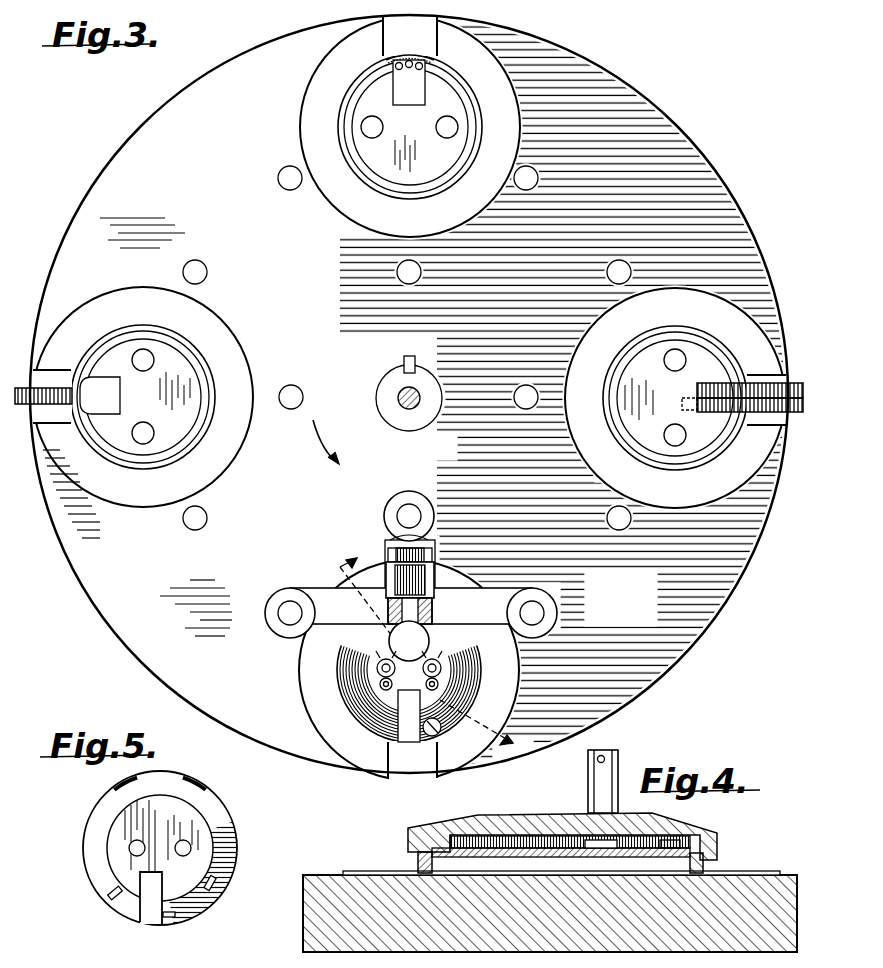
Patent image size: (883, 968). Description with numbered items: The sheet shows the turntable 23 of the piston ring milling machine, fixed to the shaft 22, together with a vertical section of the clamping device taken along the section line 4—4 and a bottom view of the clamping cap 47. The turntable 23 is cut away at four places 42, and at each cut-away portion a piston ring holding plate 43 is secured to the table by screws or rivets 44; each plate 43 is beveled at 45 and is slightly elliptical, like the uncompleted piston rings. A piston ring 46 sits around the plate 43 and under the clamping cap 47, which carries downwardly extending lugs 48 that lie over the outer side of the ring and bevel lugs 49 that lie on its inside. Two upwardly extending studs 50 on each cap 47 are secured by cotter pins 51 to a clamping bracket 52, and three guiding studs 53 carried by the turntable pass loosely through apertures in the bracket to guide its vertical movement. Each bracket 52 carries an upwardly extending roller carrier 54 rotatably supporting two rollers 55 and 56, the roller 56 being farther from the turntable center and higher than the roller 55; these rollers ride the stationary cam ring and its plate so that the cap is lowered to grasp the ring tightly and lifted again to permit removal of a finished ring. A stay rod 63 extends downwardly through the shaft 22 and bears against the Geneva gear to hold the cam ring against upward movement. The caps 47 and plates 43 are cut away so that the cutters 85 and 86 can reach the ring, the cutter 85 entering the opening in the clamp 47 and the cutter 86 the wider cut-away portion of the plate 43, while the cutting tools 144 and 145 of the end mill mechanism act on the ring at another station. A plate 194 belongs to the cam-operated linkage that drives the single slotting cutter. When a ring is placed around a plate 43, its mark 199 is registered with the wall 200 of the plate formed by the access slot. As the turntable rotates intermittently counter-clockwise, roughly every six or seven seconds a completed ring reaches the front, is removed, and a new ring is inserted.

In FIG. 3, the section line 4 is at (422, 657).
In FIG. 3, the shaft 22 is at (429, 418).
In FIG. 3, the turntable 23 is at (409, 395).
In FIG. 4, the turntable 23 is at (318, 933).
In FIG. 3, the cut away places 42 is at (392, 784).
In FIG. 3, the piston ring holding plate 43 is at (458, 740).
In FIG. 4, the piston ring holding plate 43 is at (715, 853).
In FIG. 3, the screws or rivets 44 is at (447, 125).
In FIG. 4, the screws or rivets 44 is at (640, 850).
In FIG. 3, the bevel 45 is at (360, 170).
In FIG. 4, the bevel 45 is at (430, 855).
In FIG. 3, the piston ring 46 is at (395, 193).
In FIG. 4, the piston ring 46 is at (420, 862).
In FIG. 3, the clamping cap 47 is at (362, 709).
In FIG. 5, the clamping cap 47 is at (233, 828).
In FIG. 4, the clamping cap 47 is at (470, 817).
In FIG. 5, the downwardly extending lugs 48 is at (185, 782).
In FIG. 4, the downwardly extending lugs 48 is at (407, 857).
In FIG. 5, the bevel lugs 49 is at (238, 868).
In FIG. 4, the bevel lugs 49 is at (690, 858).
In FIG. 3, the upwardly extending studs 50 is at (378, 666).
In FIG. 4, the upwardly extending studs 50 is at (607, 774).
In FIG. 3, the cotter pins 51 is at (378, 680).
In FIG. 3, the clamping bracket 52 is at (550, 617).
In FIG. 3, the guiding studs 53 is at (207, 275).
In FIG. 3, the roller carrier 54 is at (393, 562).
In FIG. 3, the roller 55 is at (397, 577).
In FIG. 3, the roller 56 is at (515, 590).
In FIG. 3, the stay rod 63 is at (406, 404).
In FIG. 3, the cutter 85 is at (743, 392).
In FIG. 3, the cutter 86 is at (752, 417).
In FIG. 3, the cutting tool 144 is at (411, 82).
In FIG. 3, the cutting tool 145 is at (428, 56).
In FIG. 3, the plate 194 is at (50, 386).
In FIG. 3, the mark 199 is at (434, 735).
In FIG. 3, the wall 200 is at (423, 724).